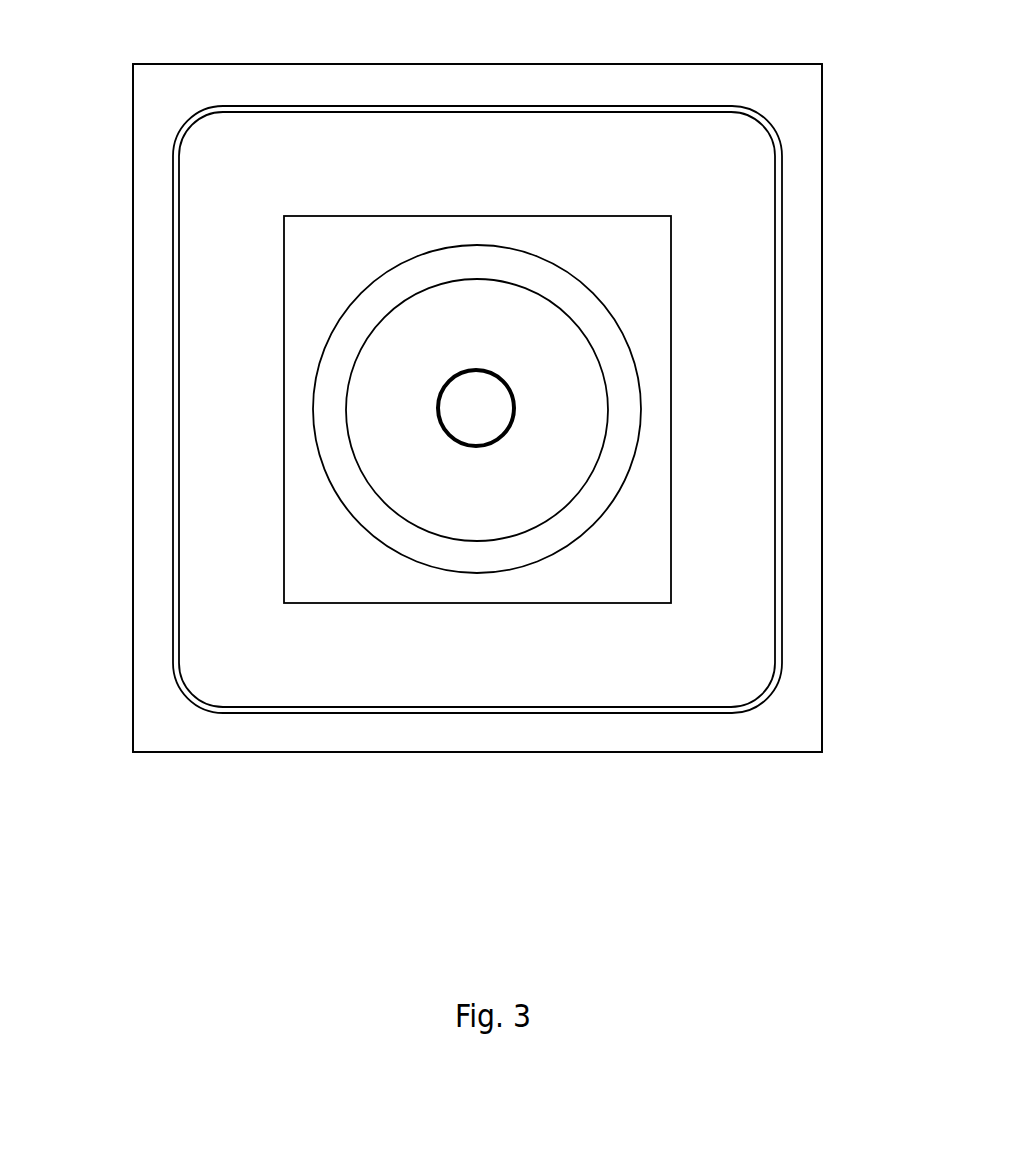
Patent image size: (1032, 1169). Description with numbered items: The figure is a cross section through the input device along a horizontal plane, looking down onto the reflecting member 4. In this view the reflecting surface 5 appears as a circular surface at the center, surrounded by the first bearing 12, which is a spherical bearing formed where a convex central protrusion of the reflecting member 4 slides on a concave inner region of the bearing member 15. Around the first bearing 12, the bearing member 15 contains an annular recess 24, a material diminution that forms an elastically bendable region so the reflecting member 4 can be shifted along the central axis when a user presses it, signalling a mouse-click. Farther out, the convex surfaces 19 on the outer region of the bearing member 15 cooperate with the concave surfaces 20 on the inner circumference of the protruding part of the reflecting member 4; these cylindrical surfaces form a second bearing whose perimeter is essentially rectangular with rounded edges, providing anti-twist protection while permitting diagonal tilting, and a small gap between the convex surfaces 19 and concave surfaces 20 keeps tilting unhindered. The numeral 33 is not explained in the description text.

The sensor arrangement 33 is at (115, 0).
The reflecting member 4 is at (813, 320).
The reflecting surface 5 is at (482, 394).
The first bearing 12 is at (530, 404).
The annular recess 24 is at (603, 485).
The bearing member 15 is at (698, 542).
The convex surfaces 19 is at (777, 589).
The concave surfaces 20 is at (783, 634).